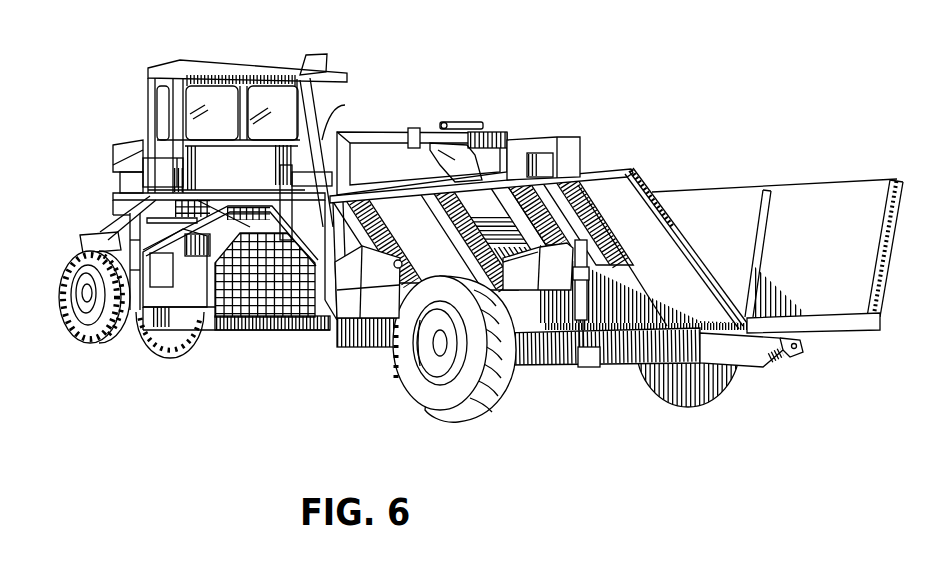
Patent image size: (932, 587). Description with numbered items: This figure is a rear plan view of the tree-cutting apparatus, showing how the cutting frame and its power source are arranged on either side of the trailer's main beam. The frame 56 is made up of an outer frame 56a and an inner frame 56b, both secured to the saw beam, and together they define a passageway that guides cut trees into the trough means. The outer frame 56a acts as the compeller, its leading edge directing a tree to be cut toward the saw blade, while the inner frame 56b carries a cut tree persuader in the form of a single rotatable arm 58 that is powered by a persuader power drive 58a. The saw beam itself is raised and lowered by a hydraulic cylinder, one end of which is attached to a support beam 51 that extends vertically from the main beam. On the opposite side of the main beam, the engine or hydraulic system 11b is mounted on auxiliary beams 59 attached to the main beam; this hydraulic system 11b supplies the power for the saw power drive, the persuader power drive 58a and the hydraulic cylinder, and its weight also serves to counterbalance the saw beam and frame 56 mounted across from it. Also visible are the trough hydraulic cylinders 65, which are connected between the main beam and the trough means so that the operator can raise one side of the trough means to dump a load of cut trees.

The support beam 51 is at (333, 120).
The hydraulic system 11b is at (200, 287).
The auxiliary beams 59 is at (257, 333).
The frame 56 is at (616, 217).
The outer frame 56a is at (579, 136).
The inner frame 56b is at (385, 131).
The rotatable arm 58 is at (457, 121).
The persuader power drive 58a is at (432, 154).
The trough hydraulic cylinders 65 is at (513, 337).